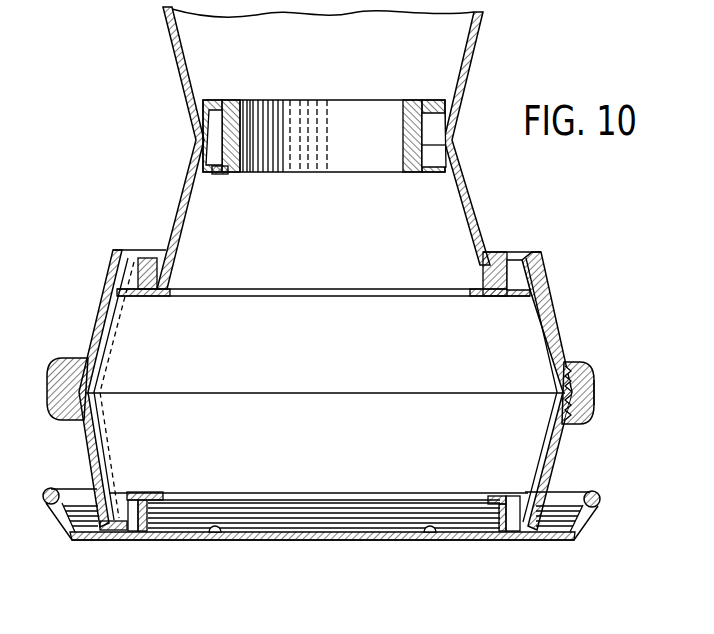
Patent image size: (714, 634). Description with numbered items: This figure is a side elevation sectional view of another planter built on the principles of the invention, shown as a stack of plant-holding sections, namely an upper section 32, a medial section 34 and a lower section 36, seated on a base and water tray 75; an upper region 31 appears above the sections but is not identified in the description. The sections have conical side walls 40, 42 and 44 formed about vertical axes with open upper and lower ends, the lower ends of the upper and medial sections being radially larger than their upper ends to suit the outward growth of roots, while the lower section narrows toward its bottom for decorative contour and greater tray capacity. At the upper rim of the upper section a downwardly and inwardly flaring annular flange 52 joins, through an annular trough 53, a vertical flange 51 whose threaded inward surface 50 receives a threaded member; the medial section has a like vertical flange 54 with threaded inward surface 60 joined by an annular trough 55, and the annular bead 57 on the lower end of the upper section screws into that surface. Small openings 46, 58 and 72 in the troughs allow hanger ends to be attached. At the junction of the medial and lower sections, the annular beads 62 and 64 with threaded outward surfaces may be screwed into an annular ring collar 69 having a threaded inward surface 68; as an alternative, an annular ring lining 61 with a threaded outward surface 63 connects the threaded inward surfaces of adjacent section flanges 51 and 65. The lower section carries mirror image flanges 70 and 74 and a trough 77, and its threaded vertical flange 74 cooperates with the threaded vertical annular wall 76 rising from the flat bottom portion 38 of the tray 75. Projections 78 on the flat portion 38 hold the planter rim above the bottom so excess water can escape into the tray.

The upper chamber 31 is at (288, 65).
The upper section 32 is at (333, 217).
The medial section 34 is at (311, 365).
The lower section 36 is at (332, 445).
The flat bottom portion 38 is at (432, 538).
The conical side wall 40 is at (178, 196).
The conical side wall 42 is at (556, 325).
The conical side wall 44 is at (90, 454).
The small opening 46 is at (216, 174).
The threaded inward surface 50 is at (237, 160).
The vertical flange 51 is at (221, 143).
The downwardly and inwardly flaring annular flange 52 is at (199, 156).
The annular trough 53 is at (207, 172).
The vertical flange 54 is at (511, 272).
The annular trough 55 is at (538, 301).
The annular bead 57 is at (487, 278).
The small opening 58 is at (524, 297).
The threaded inward surface 60 is at (506, 272).
The annular ring lining 61 is at (416, 78).
The annular bead 62 is at (563, 382).
The threaded outward surface 63 is at (404, 135).
The annular bead 64 is at (560, 406).
The section flange 65 is at (228, 104).
The threaded inward surface 68 is at (586, 377).
The annular ring collar 69 is at (595, 398).
The mirror image flange 70 is at (128, 531).
The small opening 72 is at (513, 495).
The threaded vertical flange 74 is at (144, 532).
The base and water tray 75 is at (588, 518).
The vertical annular wall 76 is at (509, 526).
The annular trough 77 is at (129, 494).
The projections 78 is at (214, 537).